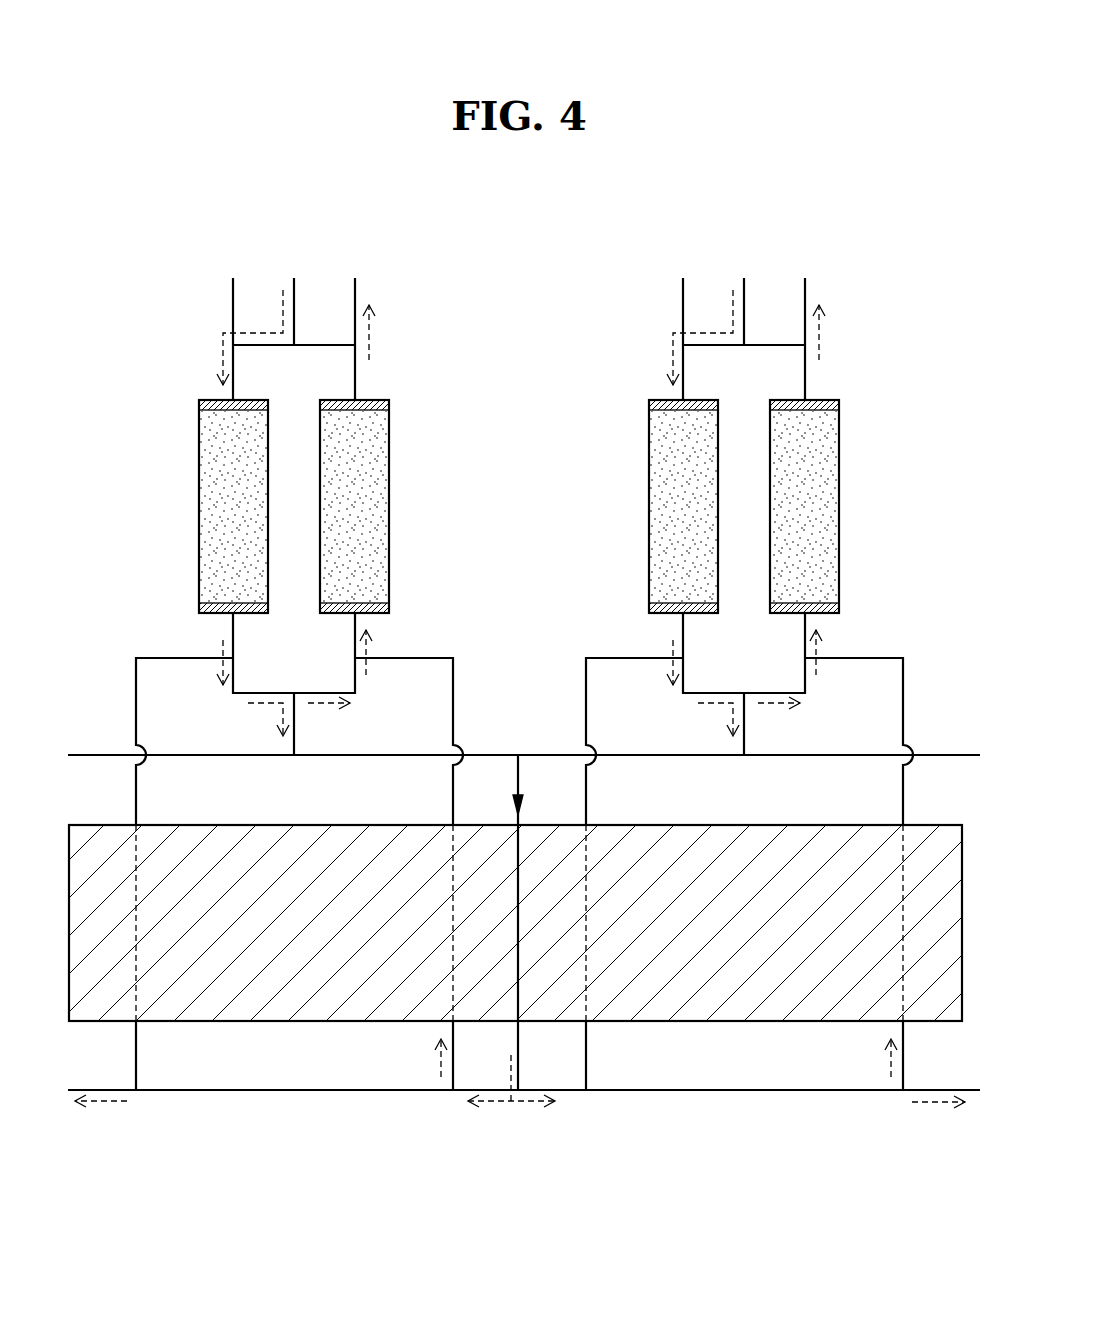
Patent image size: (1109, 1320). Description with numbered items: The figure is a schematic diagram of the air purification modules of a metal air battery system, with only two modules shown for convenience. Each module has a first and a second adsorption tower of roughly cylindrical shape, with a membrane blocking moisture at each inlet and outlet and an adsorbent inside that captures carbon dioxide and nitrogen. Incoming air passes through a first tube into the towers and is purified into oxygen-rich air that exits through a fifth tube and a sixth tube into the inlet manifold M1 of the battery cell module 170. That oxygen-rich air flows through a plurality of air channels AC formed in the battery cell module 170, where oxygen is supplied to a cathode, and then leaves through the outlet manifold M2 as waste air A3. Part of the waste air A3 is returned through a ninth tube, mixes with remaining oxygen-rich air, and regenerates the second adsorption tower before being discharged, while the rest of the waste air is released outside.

The battery cell module 170 is at (509, 937).
The inlet manifold M1 is at (938, 754).
The outlet manifold M2 is at (942, 1089).
The air channels AC is at (520, 1053).
The waste air A3 is at (514, 1121).